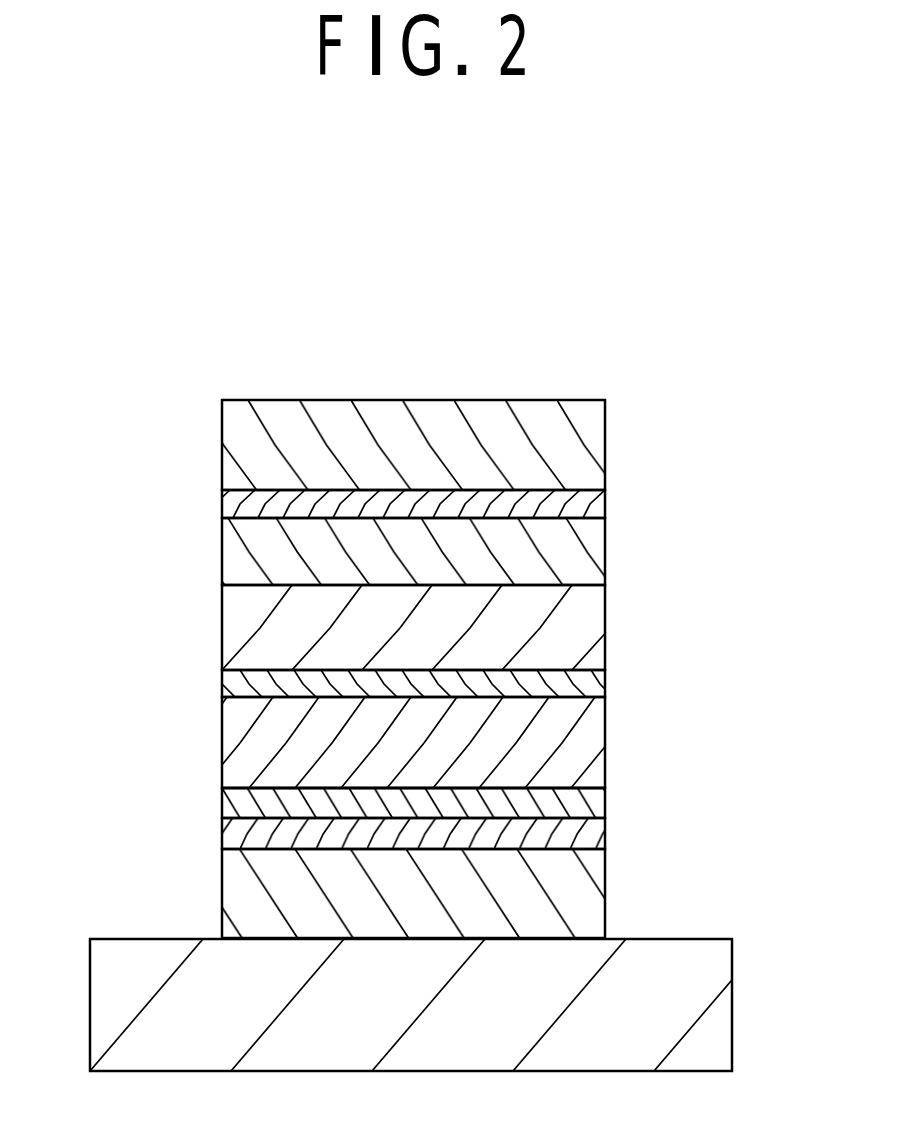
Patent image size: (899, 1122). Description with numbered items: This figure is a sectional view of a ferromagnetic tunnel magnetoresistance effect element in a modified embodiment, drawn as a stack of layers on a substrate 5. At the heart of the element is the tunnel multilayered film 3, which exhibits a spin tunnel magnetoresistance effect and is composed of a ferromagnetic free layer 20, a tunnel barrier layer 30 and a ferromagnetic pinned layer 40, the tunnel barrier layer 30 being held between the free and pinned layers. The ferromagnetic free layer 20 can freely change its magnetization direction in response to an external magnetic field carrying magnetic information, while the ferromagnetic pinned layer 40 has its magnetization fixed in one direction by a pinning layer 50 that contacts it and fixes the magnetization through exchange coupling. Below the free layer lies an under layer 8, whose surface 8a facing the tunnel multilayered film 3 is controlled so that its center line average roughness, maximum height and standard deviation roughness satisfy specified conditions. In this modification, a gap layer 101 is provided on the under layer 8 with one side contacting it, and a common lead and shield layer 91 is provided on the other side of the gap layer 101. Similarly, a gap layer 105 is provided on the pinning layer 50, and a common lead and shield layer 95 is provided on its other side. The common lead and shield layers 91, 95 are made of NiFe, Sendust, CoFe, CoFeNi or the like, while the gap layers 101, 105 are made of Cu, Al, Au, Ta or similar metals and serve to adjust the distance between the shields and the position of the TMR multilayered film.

The common lead and shield layer 95 is at (580, 447).
The gap layer 105 is at (583, 505).
The pinning layer 50 is at (580, 555).
The ferromagnetic pinned layer 40 is at (580, 638).
The tunnel barrier layer 30 is at (580, 680).
The ferromagnetic free layer 20 is at (477, 742).
The tunnel multilayered film 3 is at (509, 686).
The surface of the under layer 8a is at (567, 777).
The under layer 8 is at (593, 802).
The gap layer 101 is at (593, 832).
The common lead and shield layer 91 is at (585, 887).
The substrate 5 is at (708, 1018).